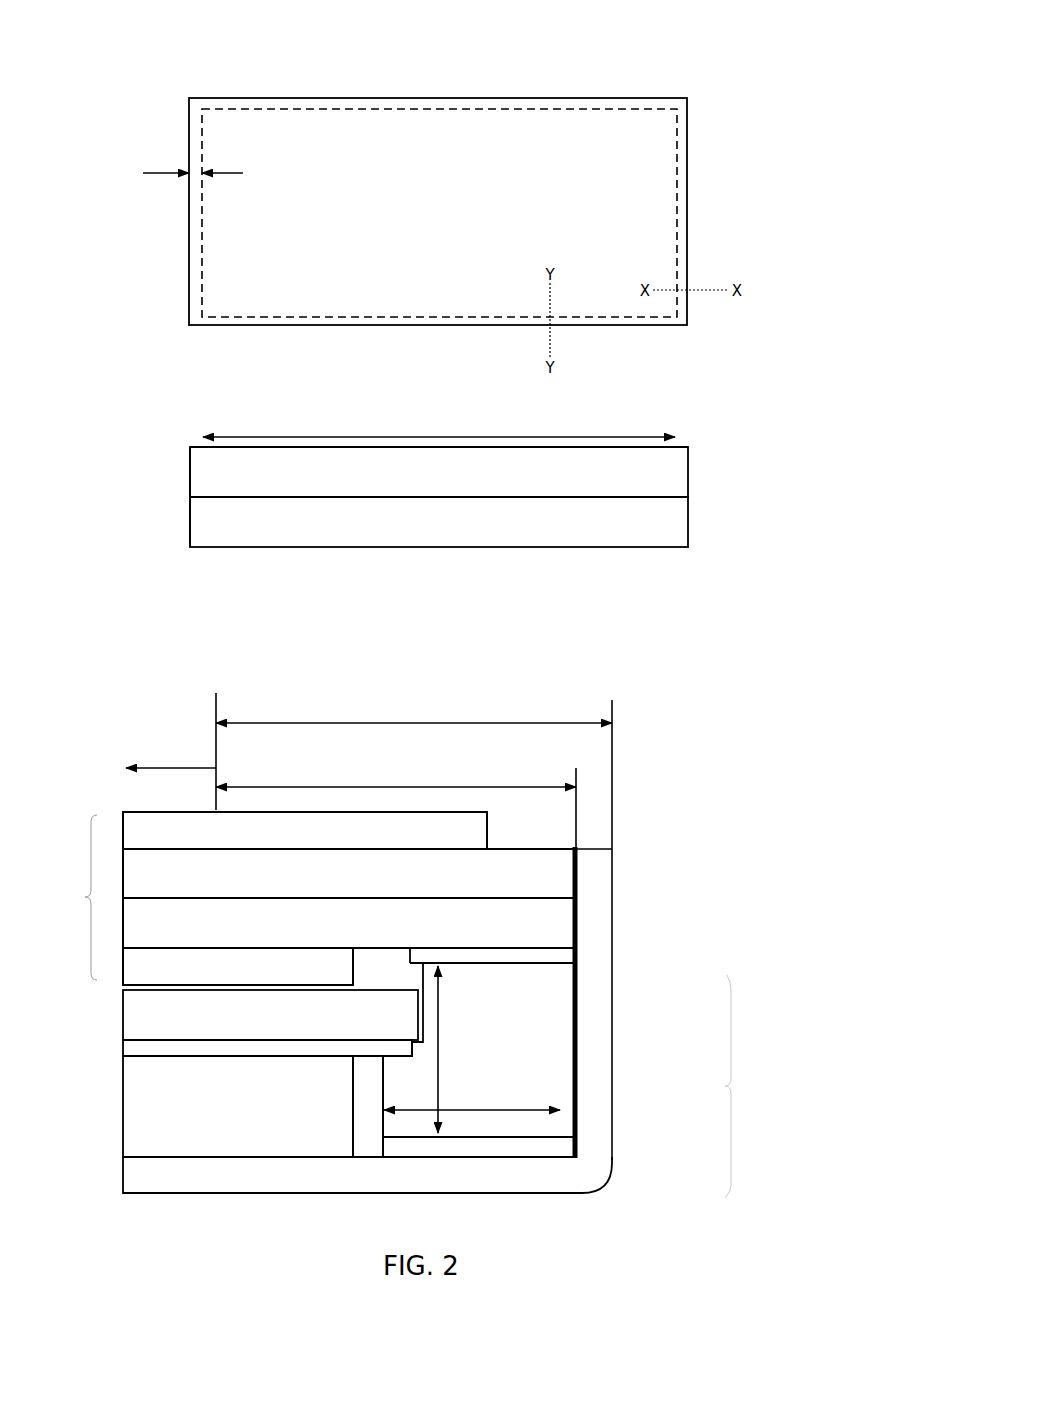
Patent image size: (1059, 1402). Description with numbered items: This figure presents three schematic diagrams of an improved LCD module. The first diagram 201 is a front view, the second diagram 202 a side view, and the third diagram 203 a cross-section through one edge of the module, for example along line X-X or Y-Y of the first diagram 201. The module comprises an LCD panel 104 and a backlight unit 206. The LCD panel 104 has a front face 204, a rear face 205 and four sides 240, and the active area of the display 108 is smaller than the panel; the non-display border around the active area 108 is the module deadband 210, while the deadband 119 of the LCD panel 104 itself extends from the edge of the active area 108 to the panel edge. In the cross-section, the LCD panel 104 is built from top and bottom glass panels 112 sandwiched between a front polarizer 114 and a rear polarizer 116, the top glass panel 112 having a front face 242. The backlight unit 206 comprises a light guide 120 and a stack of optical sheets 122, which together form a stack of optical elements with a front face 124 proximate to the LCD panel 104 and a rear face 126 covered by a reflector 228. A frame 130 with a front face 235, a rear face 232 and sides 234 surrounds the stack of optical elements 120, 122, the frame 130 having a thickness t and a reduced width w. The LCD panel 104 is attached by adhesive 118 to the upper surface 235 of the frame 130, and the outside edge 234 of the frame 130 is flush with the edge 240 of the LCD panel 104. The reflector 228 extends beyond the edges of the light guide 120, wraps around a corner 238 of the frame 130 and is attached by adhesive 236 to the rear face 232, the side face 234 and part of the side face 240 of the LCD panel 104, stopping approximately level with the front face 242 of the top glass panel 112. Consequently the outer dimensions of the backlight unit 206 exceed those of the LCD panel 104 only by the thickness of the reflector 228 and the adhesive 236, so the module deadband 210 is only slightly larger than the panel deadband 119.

The first diagram 201 is at (662, 72).
The second diagram 202 is at (748, 425).
The third diagram 203 is at (665, 715).
The LCD panel 104 is at (687, 157).
The active area of the display 108 is at (394, 438).
The backlight unit 206 is at (687, 262).
The module deadband 210 is at (322, 651).
The panel deadband 119 is at (396, 793).
The side of the LCD panel 240 is at (190, 478).
The rear face of the LCD panel 205 is at (195, 500).
The front face of the LCD panel 204 is at (677, 440).
The polarizer 114 is at (305, 830).
The glass panel 112 is at (367, 898).
The polarizer 116 is at (238, 966).
The front face of the stack of optical elements 124 is at (357, 986).
The optical sheets 122 is at (270, 1023).
The light guide 120 is at (253, 1106).
The reflector 228 is at (367, 1175).
The rear face of the stack of optical elements 126 is at (170, 1160).
The frame 130 is at (479, 1060).
The front face of the top glass panel 242 is at (510, 849).
The adhesive 118 is at (532, 957).
The front face of the frame 235 is at (537, 963).
The side of the frame 234 is at (572, 990).
The adhesive 236 is at (578, 1042).
The rear face of the frame 232 is at (513, 1138).
The corner of the frame 238 is at (578, 1137).